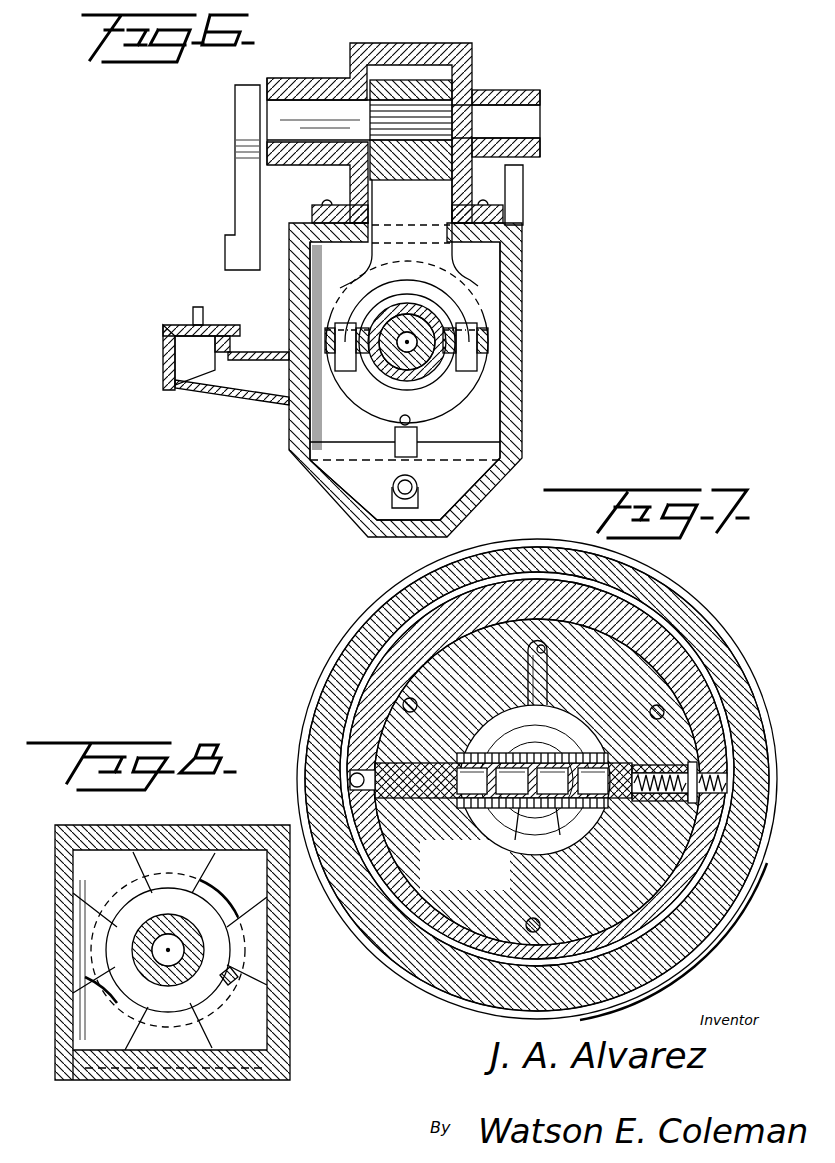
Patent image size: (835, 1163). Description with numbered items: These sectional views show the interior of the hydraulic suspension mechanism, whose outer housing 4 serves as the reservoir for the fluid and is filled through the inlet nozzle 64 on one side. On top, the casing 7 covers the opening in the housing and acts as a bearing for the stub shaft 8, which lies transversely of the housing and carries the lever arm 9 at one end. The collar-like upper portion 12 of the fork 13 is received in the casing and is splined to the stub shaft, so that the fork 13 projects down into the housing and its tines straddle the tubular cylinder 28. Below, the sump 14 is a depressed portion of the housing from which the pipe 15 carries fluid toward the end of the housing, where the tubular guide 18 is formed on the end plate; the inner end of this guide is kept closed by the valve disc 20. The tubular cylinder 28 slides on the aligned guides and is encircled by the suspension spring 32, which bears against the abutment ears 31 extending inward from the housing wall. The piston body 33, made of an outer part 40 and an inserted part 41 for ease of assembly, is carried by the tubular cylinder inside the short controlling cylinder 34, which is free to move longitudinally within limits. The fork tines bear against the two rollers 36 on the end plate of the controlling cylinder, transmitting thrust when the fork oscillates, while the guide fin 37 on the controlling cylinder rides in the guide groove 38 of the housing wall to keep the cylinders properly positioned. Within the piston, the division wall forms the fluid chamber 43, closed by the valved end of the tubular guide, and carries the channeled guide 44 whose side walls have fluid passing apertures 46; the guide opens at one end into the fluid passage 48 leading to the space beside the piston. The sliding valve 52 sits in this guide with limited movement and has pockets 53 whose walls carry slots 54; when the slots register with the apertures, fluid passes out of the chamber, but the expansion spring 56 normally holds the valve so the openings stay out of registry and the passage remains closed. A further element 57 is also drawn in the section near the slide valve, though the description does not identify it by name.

In FIG. 6, the outer housing 4 is at (281, 441).
In FIG. 8, the outer housing 4 is at (298, 979).
In FIG. 6, the casing 7 is at (472, 50).
In FIG. 6, the stub shaft 8 is at (510, 125).
In FIG. 6, the lever arm 9 is at (247, 178).
In FIG. 6, the collar-like upper portion 12 is at (437, 92).
In FIG. 6, the fork 13 is at (463, 298).
In FIG. 6, the sump 14 is at (352, 517).
In FIG. 6, the pipe 15 is at (420, 495).
In FIG. 6, the tubular guide 18 is at (397, 367).
In FIG. 7, the tubular guide 18 is at (520, 842).
In FIG. 8, the tubular guide 18 is at (150, 905).
In FIG. 6, the valve disc 20 is at (407, 352).
In FIG. 7, the valve disc 20 is at (525, 818).
In FIG. 6, the tubular cylinder 28 is at (420, 363).
In FIG. 8, the tubular cylinder 28 is at (187, 913).
In FIG. 8, the abutment ears 31 is at (290, 1017).
In FIG. 8, the suspension spring 32 is at (115, 900).
In FIG. 7, the piston body 33 is at (677, 926).
In FIG. 6, the controlling cylinder 34 is at (488, 378).
In FIG. 7, the controlling cylinder 34 is at (694, 974).
In FIG. 6, the rollers 36 is at (335, 343).
In FIG. 6, the guide fin 37 is at (398, 432).
In FIG. 6, the guide groove 38 is at (390, 447).
In FIG. 7, the outer part of piston 40 is at (690, 888).
In FIG. 7, the inserted part of piston 41 is at (660, 860).
In FIG. 7, the fluid chamber 43 is at (511, 869).
In FIG. 7, the channeled guide 44 is at (557, 743).
In FIG. 7, the fluid passing apertures 46 is at (520, 750).
In FIG. 7, the fluid passage 48 is at (352, 773).
In FIG. 7, the sliding valve 52 is at (393, 767).
In FIG. 7, the pockets 53 is at (547, 813).
In FIG. 7, the slots 54 is at (540, 748).
In FIG. 7, the expansion spring 56 is at (697, 762).
In FIG. 7, the rod 57 is at (548, 668).
In FIG. 6, the inlet nozzle 64 is at (222, 375).